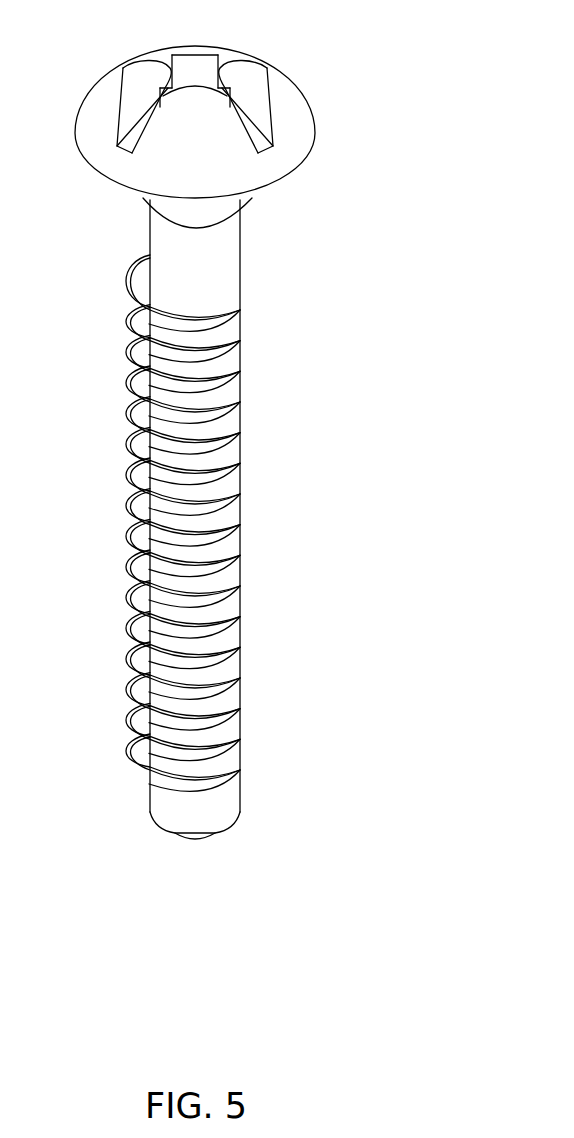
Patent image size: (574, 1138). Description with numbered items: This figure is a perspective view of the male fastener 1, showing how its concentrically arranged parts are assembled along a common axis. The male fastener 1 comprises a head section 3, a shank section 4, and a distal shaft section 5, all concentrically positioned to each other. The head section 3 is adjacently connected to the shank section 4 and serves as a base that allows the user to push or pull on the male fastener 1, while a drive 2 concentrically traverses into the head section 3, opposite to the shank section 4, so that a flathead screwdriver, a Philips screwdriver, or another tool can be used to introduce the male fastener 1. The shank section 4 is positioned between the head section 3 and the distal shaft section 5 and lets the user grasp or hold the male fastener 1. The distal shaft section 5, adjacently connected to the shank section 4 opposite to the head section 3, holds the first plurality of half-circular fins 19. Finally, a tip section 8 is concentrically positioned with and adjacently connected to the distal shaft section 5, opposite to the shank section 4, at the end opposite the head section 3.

The male fastener 1 is at (244, 471).
The drive 2 is at (199, 72).
The head section 3 is at (305, 137).
The shank section 4 is at (233, 208).
The distal shaft section 5 is at (230, 792).
The tip section 8 is at (195, 836).
The first plurality of half-circular fins 19 is at (130, 382).